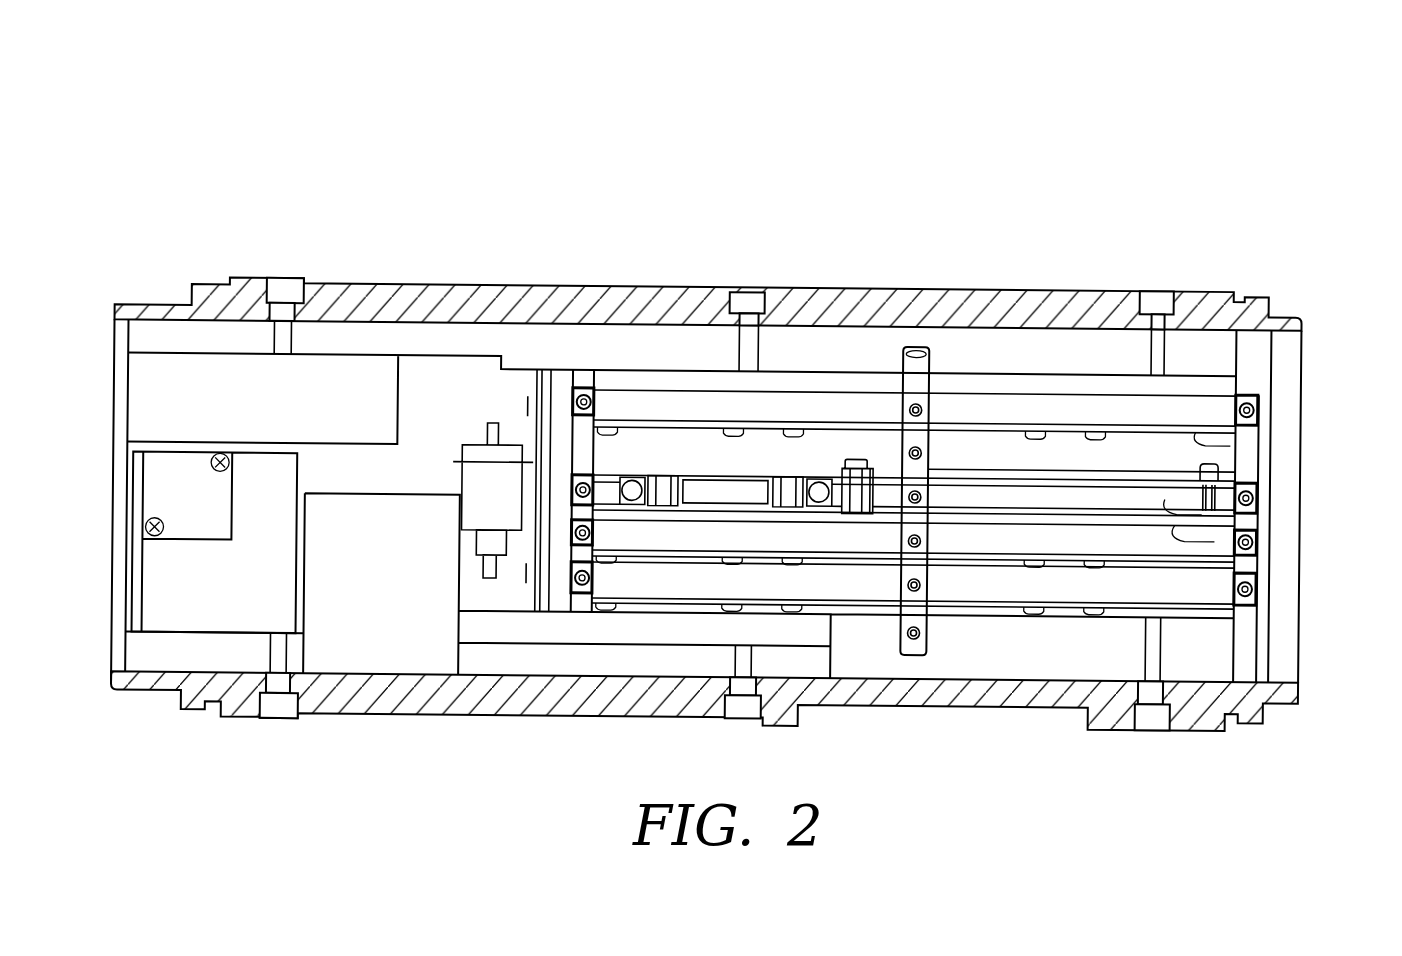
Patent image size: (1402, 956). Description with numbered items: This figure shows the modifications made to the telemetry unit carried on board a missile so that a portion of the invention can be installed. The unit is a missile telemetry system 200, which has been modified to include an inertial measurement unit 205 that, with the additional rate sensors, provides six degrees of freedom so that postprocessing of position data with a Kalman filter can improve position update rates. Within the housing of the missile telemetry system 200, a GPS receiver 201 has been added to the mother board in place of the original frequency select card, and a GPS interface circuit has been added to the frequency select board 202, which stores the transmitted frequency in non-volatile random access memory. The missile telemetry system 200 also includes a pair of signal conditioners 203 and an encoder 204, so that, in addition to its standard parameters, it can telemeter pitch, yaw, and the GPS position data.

The missile telemetry system 200 is at (600, 255).
The GPS receiver 201 is at (1165, 496).
The frequency select board 202 is at (1175, 517).
The signal conditioners 203 is at (890, 567).
The encoder 204 is at (1193, 430).
The inertial measurement unit 205 is at (178, 618).